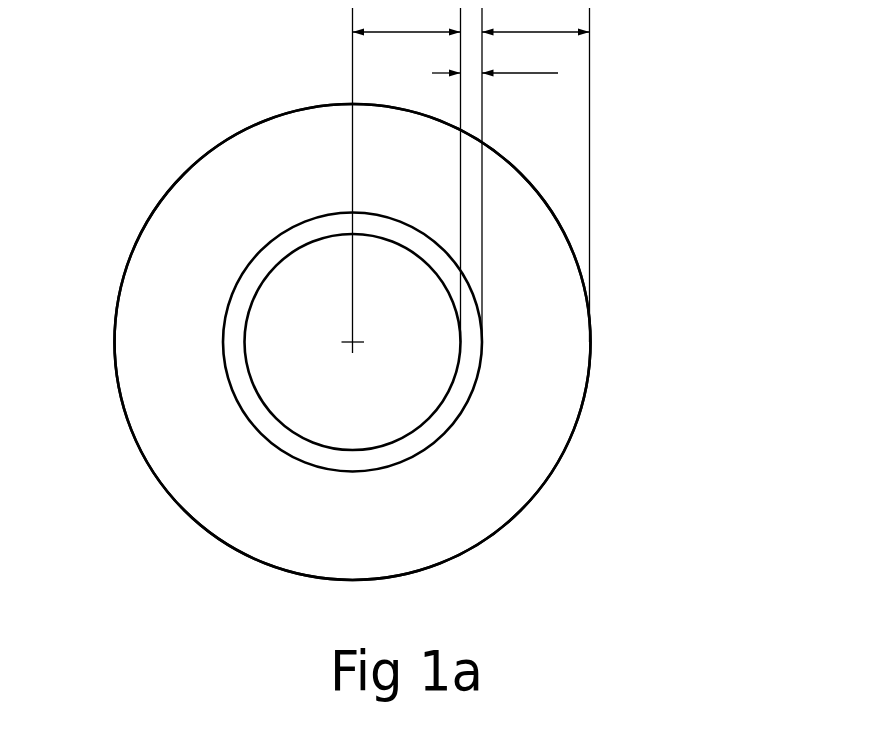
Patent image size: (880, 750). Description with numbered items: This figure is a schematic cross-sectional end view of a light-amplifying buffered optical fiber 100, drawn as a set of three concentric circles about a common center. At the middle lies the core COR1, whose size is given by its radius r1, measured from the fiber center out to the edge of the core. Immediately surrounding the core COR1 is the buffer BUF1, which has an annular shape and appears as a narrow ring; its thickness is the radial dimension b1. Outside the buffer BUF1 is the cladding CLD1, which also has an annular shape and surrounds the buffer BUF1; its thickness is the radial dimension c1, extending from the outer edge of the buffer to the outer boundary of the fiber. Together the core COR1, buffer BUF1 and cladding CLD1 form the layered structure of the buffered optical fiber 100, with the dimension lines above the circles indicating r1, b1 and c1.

The light-amplifying buffered optical fiber 100 is at (170, 102).
The core COR1 is at (391, 417).
The buffer BUF1 is at (459, 392).
The cladding CLD1 is at (569, 370).
The radius r1 is at (407, 18).
The radial dimension b1 is at (495, 58).
The radial dimension c1 is at (536, 18).